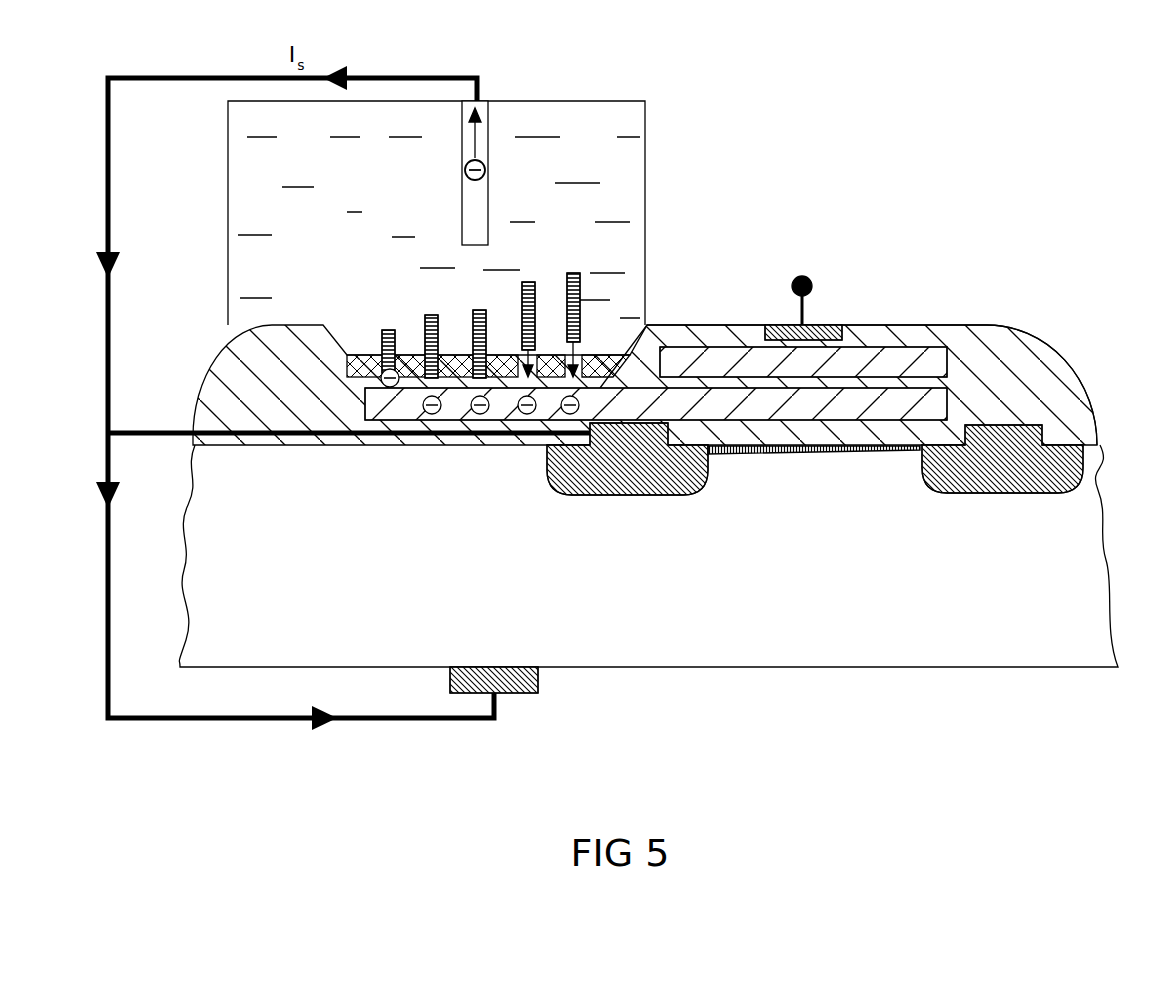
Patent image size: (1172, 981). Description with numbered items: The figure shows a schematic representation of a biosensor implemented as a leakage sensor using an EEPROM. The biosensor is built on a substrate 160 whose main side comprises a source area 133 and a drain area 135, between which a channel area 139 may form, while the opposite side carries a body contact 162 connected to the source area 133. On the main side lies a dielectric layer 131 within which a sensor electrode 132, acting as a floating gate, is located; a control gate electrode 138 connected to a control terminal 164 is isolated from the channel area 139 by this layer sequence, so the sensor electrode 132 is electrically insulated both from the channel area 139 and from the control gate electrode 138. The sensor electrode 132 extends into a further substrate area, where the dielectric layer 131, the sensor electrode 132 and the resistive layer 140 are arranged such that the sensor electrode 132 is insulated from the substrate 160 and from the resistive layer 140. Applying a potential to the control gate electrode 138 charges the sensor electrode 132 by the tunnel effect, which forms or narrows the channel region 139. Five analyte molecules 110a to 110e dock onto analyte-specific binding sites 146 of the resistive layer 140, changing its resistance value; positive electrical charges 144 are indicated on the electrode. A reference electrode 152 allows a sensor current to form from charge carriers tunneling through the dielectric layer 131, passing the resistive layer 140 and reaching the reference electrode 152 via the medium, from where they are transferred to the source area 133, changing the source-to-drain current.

The analyte molecule 110a is at (377, 343).
The analyte molecule 110e is at (567, 288).
The dielectric layer 131 is at (1060, 385).
The sensor electrode 132 is at (940, 405).
The source area 133 is at (637, 497).
The drain area 135 is at (1020, 495).
The control gate electrode 138 is at (925, 355).
The channel area 139 is at (745, 457).
The resistive layer 140 is at (355, 372).
The positive electrical charges 144 is at (612, 385).
The analyte-specific binding sites 146 is at (600, 385).
The reference electrode 152 is at (477, 135).
The substrate 160 is at (878, 635).
The body contact 162 is at (517, 695).
The control terminal 164 is at (833, 325).